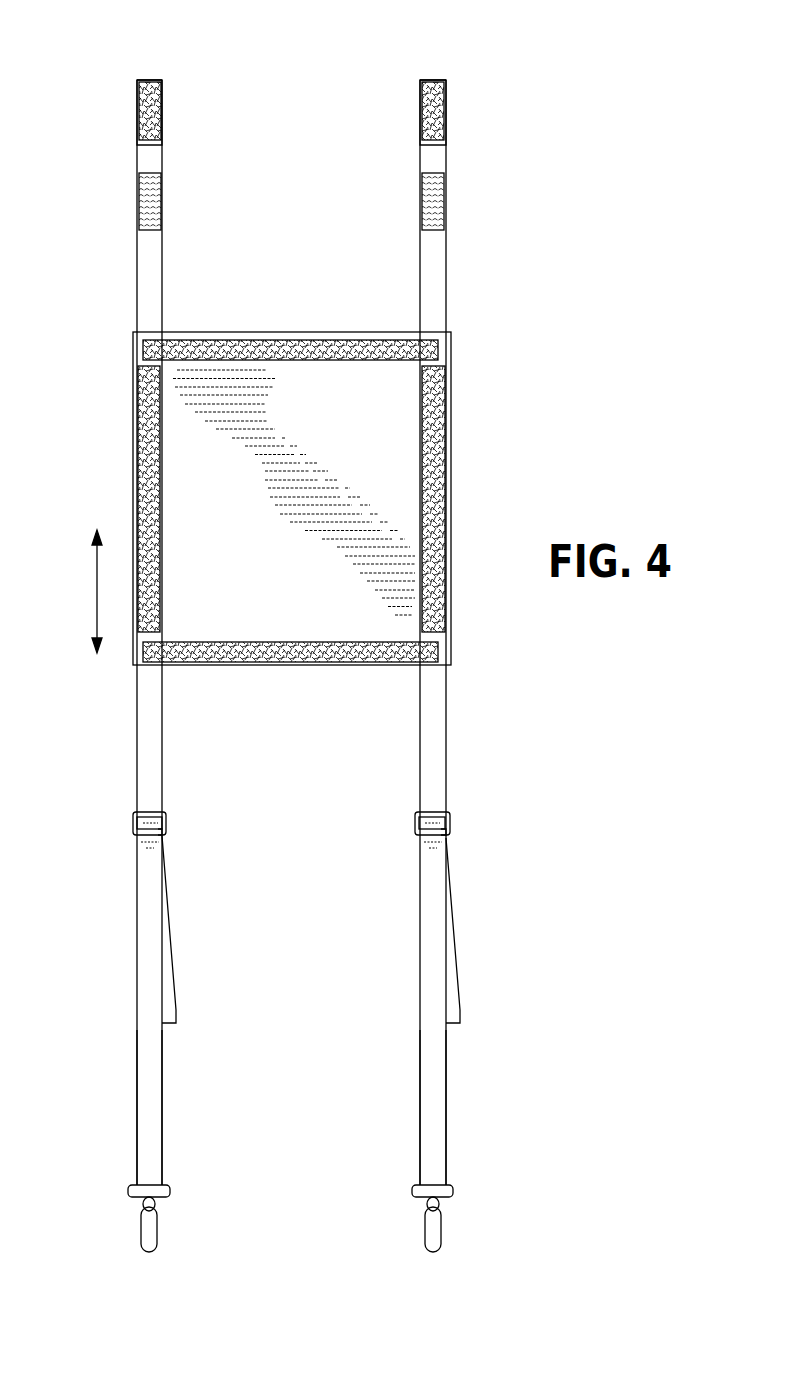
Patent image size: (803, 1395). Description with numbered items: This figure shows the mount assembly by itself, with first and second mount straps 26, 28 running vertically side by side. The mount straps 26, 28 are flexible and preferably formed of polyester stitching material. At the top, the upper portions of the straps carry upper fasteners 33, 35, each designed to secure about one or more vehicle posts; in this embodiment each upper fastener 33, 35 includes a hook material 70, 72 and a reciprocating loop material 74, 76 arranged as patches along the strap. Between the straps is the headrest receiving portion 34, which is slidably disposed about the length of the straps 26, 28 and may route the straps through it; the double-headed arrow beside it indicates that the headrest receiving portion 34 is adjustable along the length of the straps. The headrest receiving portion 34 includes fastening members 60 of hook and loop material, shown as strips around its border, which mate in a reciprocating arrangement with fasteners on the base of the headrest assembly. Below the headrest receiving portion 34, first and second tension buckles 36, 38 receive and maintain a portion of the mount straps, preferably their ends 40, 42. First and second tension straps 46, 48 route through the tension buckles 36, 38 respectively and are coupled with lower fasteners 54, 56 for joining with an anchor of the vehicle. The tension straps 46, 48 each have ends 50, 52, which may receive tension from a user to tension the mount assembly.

The first mount strap 26 is at (433, 758).
The second mount strap 28 is at (152, 758).
The upper fastener 33 is at (446, 115).
The upper fastener 35 is at (162, 116).
The headrest receiving portion 34 is at (380, 418).
The first tension buckle 36 is at (445, 832).
The second tension buckle 38 is at (165, 832).
The end 40 is at (433, 810).
The end 42 is at (152, 810).
The first tension strap 46 is at (440, 1060).
The second tension strap 48 is at (157, 1060).
The end 50 is at (460, 1010).
The end 52 is at (175, 1010).
The lower fastener 54 is at (442, 1225).
The lower fastener 56 is at (158, 1225).
The fastening members 60 is at (336, 350).
The hook material 70 is at (422, 195).
The hook material 72 is at (162, 207).
The loop material 74 is at (422, 97).
The loop material 76 is at (162, 97).